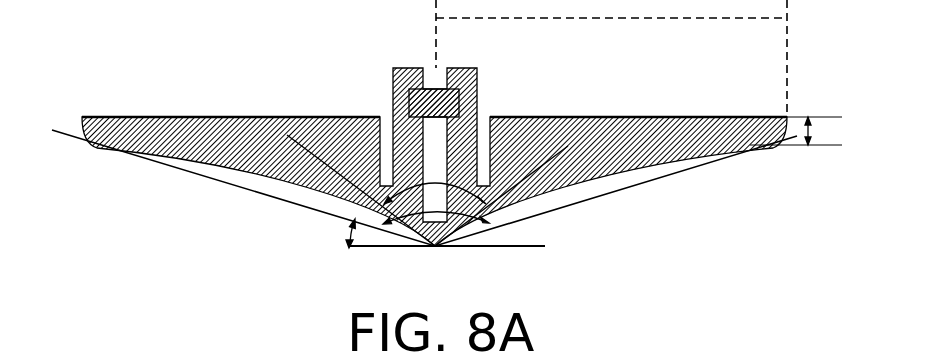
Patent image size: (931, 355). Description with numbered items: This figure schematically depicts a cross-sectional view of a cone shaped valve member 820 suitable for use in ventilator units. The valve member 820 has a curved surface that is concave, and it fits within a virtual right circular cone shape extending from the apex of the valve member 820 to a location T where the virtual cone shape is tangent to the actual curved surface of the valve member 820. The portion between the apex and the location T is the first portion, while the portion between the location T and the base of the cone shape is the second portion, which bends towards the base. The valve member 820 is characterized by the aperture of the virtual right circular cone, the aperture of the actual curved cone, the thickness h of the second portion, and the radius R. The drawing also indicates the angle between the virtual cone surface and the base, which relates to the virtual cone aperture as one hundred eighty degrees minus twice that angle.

The valve member 820 is at (142, 124).
The location T is at (96, 152).
The radius R is at (611, 58).
The thickness h is at (796, 131).